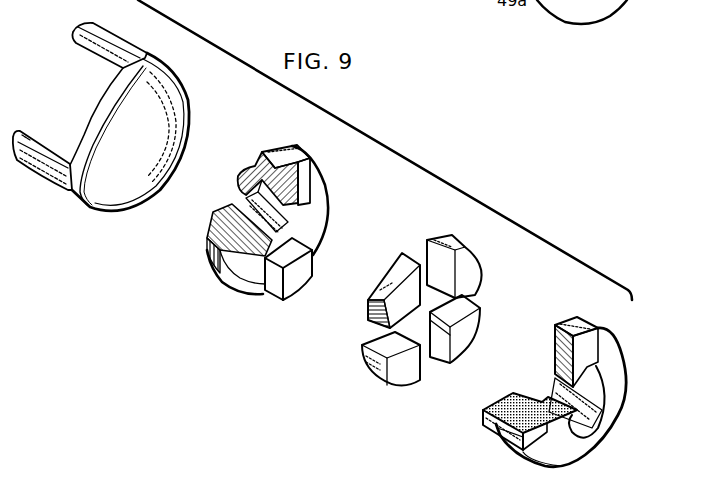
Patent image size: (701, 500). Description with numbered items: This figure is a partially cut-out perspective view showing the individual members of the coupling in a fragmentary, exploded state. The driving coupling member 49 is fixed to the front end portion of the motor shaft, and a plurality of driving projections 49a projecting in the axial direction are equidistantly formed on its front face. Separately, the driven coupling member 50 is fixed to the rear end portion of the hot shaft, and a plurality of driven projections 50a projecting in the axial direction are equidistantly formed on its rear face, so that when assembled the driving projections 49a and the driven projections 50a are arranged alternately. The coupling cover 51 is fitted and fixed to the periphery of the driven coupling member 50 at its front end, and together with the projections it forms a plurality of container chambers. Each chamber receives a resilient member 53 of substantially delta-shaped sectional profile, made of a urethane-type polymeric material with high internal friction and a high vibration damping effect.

The driving coupling member 49 is at (608, 337).
The driving projections 49a is at (557, 387).
The driven coupling member 50 is at (325, 208).
The driven projections 50a is at (300, 166).
The coupling cover 51 is at (130, 45).
The resilient member 53 is at (368, 330).